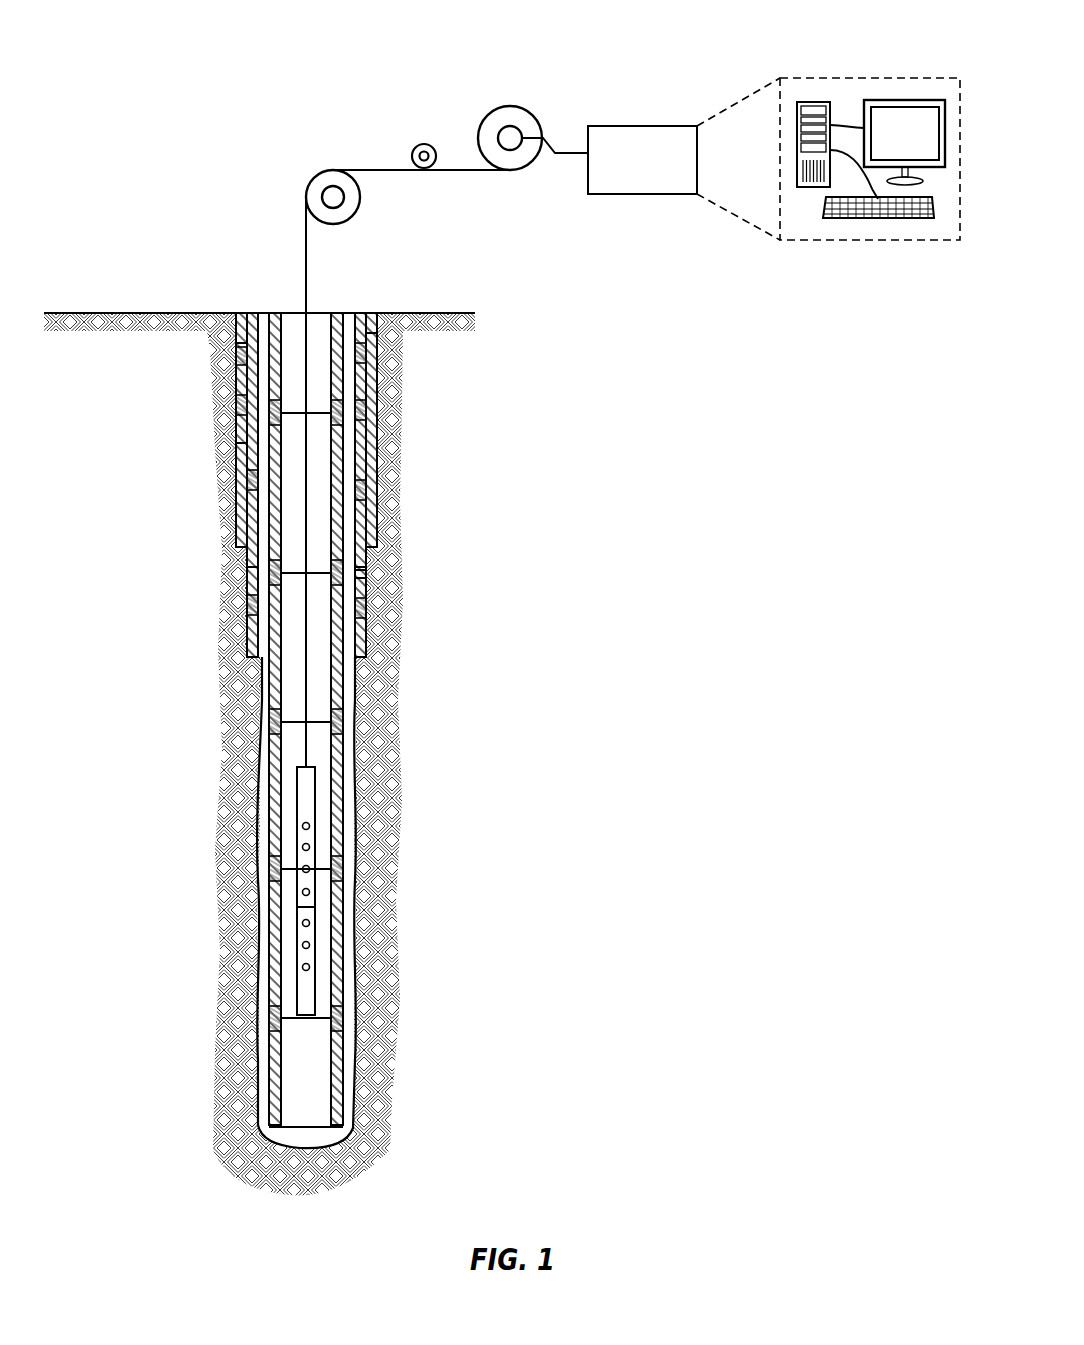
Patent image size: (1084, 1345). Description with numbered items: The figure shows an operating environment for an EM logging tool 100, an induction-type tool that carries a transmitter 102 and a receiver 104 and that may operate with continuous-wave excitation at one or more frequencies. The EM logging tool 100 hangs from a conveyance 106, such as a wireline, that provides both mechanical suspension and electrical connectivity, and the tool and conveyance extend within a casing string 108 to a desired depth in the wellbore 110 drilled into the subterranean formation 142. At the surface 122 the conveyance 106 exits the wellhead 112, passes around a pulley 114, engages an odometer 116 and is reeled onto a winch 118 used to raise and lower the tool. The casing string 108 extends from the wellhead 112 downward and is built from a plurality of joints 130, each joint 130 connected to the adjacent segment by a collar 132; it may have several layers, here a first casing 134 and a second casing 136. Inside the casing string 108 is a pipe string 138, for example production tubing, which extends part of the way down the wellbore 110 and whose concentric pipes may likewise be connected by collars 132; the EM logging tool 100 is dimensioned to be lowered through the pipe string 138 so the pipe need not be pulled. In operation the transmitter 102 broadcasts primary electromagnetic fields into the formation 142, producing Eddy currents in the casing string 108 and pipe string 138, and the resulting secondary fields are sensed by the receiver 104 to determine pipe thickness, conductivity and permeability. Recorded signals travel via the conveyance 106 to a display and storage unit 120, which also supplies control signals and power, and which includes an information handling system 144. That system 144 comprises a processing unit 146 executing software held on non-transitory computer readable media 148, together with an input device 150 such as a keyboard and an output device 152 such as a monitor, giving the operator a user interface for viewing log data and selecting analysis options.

The EM logging tool 100 is at (300, 1002).
The transmitter 102 is at (311, 826).
The receiver 104 is at (313, 847).
The conveyance 106 is at (308, 270).
The casing string 108 is at (224, 534).
The wellbore 110 is at (358, 660).
The wellhead 112 is at (293, 303).
The pulley 114 is at (308, 186).
The odometer 116 is at (426, 144).
The winch 118 is at (523, 106).
The display and storage unit 120 is at (650, 124).
The surface 122 is at (82, 312).
The joint 130 is at (237, 318).
The collar 132 is at (240, 355).
The first casing 134 is at (361, 570).
The second casing 136 is at (372, 522).
The pipe string 138 is at (345, 1085).
The subterranean formation 142 is at (592, 643).
The information handling system 144 is at (850, 78).
The processing unit 146 is at (812, 196).
The non-transitory computer readable media 148 is at (813, 101).
The input device 150 is at (878, 219).
The output device 152 is at (903, 100).